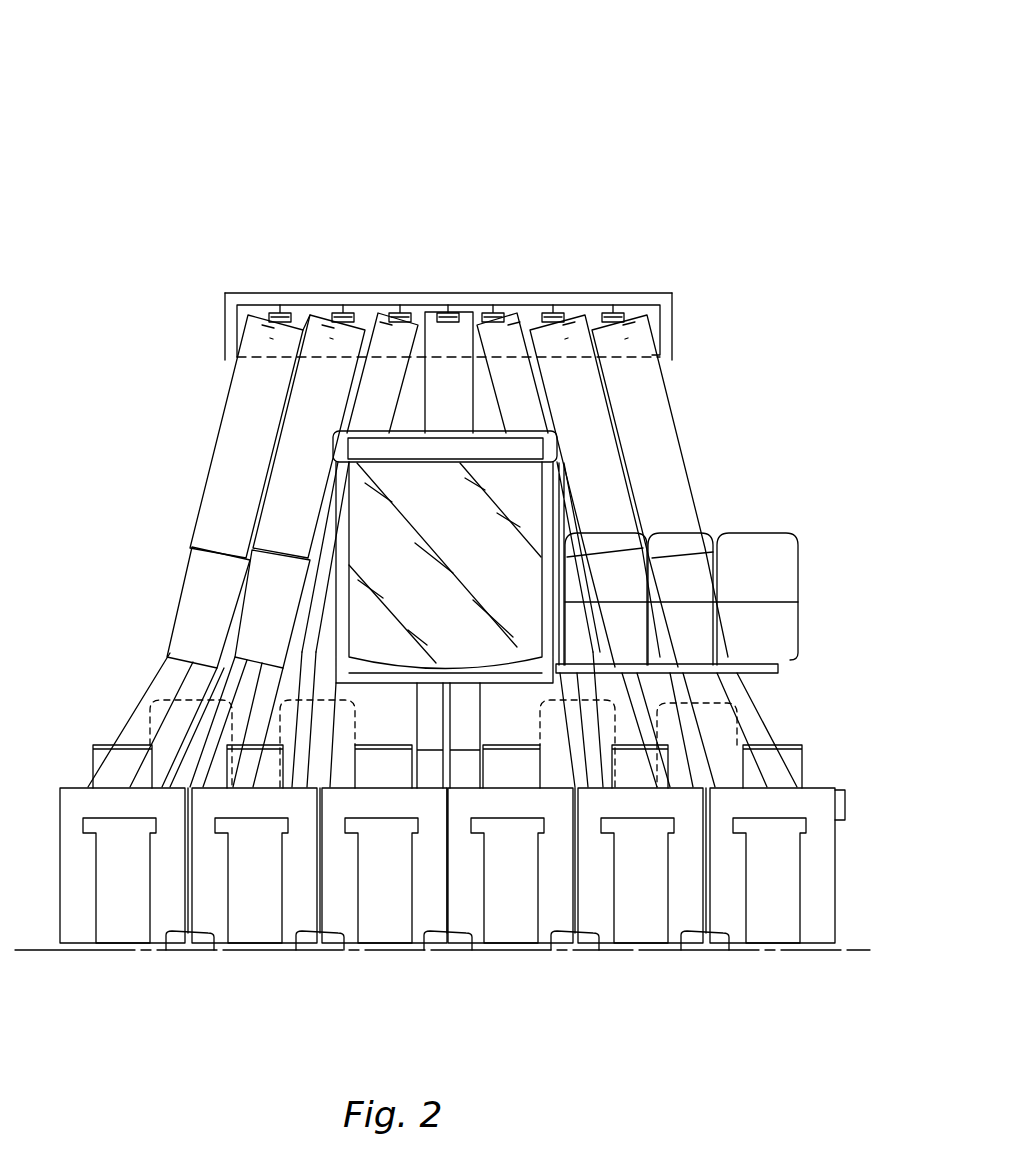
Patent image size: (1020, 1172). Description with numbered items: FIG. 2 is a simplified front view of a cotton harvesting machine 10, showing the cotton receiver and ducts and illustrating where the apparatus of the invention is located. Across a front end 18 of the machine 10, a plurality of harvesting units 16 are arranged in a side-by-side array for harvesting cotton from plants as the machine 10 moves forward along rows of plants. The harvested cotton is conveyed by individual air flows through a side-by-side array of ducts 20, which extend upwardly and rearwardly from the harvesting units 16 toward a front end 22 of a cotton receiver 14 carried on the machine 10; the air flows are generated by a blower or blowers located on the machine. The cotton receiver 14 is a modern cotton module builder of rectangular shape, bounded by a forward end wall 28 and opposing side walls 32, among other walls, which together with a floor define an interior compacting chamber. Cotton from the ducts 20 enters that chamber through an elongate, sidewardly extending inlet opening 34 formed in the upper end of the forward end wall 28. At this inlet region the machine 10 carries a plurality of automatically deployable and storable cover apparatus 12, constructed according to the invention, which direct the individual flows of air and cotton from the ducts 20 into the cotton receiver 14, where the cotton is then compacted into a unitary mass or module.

The cotton harvesting machine 10 is at (706, 113).
The cover apparatus 12 is at (273, 312).
The cotton receiver 14 is at (681, 290).
The harvesting units 16 is at (209, 958).
The front end 18 is at (778, 668).
The ducts 20 is at (455, 373).
The front end 22 is at (672, 310).
The forward end wall 28 is at (663, 363).
The side walls 32 is at (225, 295).
The inlet opening 34 is at (300, 313).